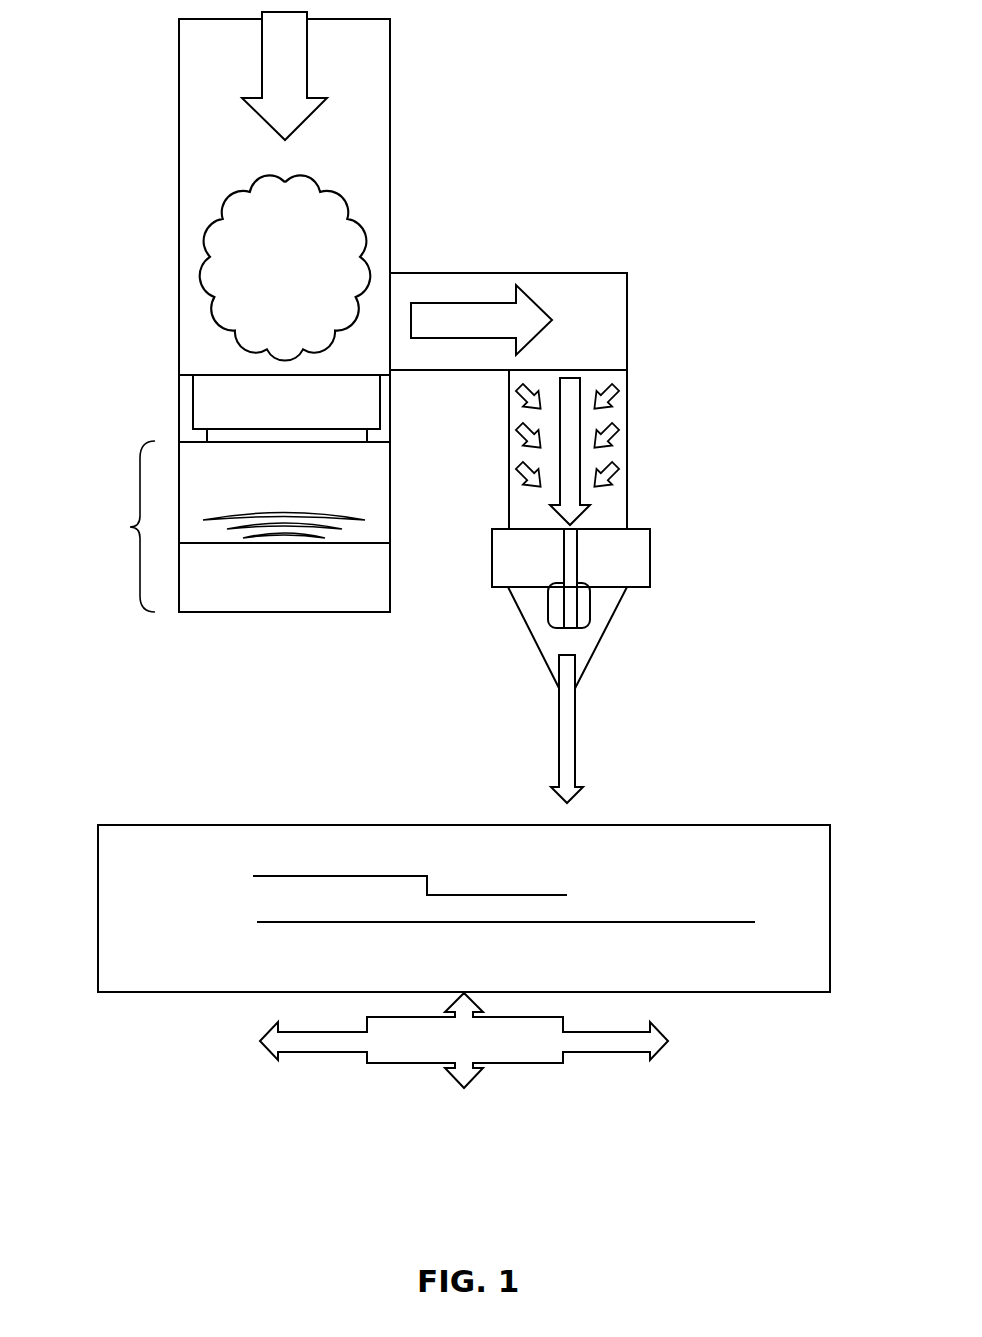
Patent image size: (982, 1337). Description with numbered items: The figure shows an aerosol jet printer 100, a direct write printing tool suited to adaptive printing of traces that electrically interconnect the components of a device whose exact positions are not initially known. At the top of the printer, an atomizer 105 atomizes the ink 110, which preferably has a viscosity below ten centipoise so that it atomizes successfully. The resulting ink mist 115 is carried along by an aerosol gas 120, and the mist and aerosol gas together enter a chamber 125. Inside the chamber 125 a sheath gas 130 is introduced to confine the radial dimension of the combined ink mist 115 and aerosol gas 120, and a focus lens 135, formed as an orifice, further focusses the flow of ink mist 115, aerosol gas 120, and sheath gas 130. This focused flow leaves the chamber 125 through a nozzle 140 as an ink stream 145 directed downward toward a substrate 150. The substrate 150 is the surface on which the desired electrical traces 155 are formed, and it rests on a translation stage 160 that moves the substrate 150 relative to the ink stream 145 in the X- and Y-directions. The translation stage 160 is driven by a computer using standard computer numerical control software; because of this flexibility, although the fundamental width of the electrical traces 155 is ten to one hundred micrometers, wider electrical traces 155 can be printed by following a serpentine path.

The aerosol jet printer 100 is at (635, 55).
The atomizer 105 is at (130, 527).
The ink 110 is at (158, 406).
The ink mist 115 is at (153, 273).
The aerosol gas 120 is at (150, 56).
The chamber 125 is at (645, 338).
The sheath gas 130 is at (653, 442).
The focus lens 135 is at (637, 617).
The nozzle 140 is at (607, 682).
The ink stream 145 is at (537, 745).
The substrate 150 is at (295, 808).
The electrical traces 155 is at (293, 860).
The translation stage 160 is at (519, 1075).